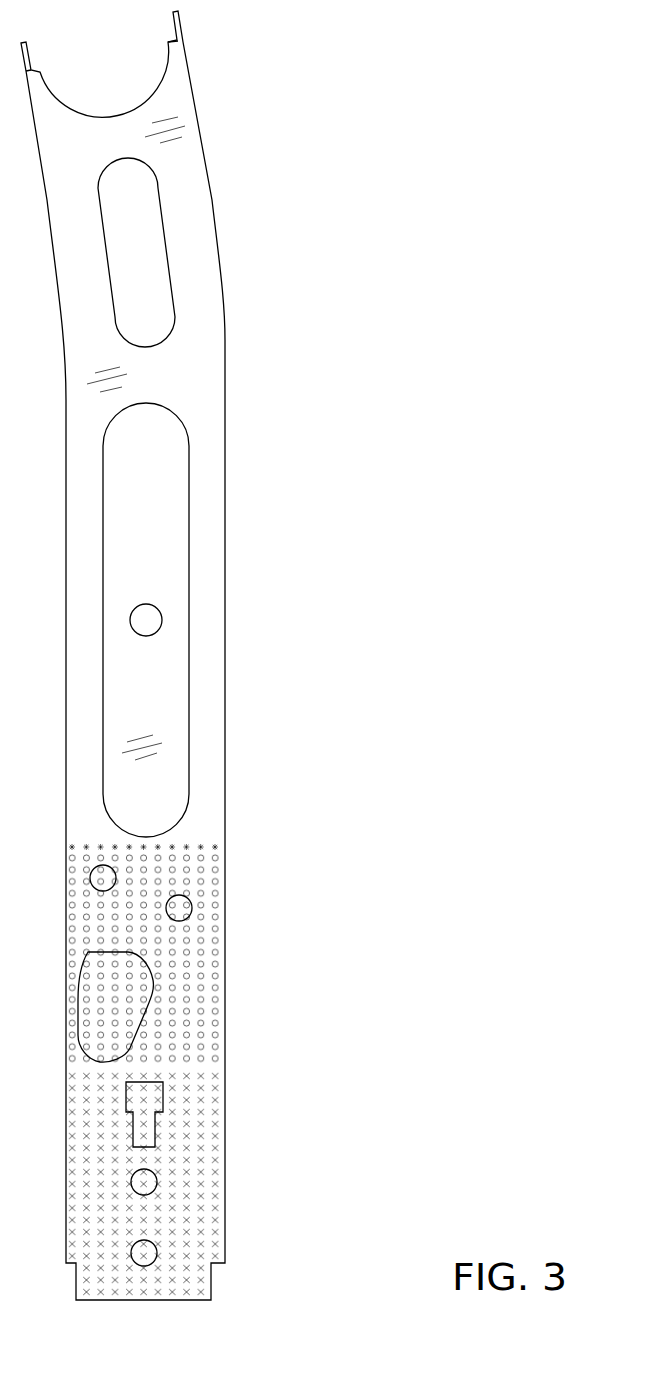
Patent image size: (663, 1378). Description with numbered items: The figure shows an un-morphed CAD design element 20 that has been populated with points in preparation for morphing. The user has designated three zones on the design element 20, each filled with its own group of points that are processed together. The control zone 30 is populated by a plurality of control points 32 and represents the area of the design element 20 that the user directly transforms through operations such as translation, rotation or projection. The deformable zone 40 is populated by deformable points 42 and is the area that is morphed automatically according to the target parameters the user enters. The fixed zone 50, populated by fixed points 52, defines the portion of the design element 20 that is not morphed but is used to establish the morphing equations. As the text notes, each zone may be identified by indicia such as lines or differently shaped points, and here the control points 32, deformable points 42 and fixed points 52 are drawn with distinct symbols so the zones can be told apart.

The CAD design element 20 is at (232, 573).
The control zone 30 is at (200, 1185).
The control points 32 is at (213, 1188).
The deformable zone 40 is at (225, 921).
The deformable points 42 is at (215, 967).
The fixed zone 50 is at (230, 902).
The fixed points 52 is at (189, 847).